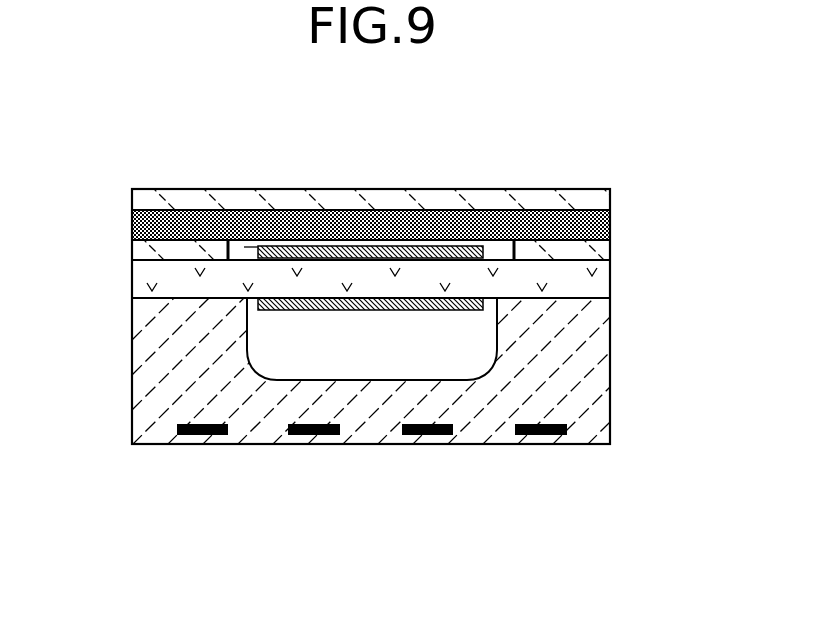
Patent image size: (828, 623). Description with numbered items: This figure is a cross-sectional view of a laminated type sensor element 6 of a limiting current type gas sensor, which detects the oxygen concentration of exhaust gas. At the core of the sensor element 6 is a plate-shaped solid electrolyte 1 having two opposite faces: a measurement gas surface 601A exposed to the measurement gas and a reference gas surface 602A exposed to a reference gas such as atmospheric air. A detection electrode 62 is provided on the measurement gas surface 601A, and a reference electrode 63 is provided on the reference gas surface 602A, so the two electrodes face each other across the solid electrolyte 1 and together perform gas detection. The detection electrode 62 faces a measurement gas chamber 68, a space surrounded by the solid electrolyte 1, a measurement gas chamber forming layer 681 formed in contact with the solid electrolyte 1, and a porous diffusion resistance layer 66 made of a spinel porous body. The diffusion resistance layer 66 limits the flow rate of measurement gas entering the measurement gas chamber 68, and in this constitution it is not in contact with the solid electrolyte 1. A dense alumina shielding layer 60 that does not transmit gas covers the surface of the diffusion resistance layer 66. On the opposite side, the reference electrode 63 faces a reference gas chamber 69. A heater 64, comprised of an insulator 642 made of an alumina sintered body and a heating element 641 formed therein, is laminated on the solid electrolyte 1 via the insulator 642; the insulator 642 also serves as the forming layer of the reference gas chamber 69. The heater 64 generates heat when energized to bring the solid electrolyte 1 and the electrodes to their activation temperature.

The sensor element 6 is at (601, 163).
The shielding layer 60 is at (395, 205).
The diffusion resistance layer 66 is at (185, 222).
The measurement gas chamber 68 is at (498, 250).
The measurement gas chamber forming layer 681 is at (170, 249).
The measurement gas surface 601A is at (245, 258).
The detection electrode 62 is at (440, 250).
The solid electrolyte 1 is at (590, 287).
The heater 64 is at (580, 398).
The reference gas chamber 69 is at (285, 358).
The reference gas surface 602A is at (487, 300).
The reference electrode 63 is at (365, 310).
The heating element 641 is at (315, 432).
The insulator 642 is at (233, 378).